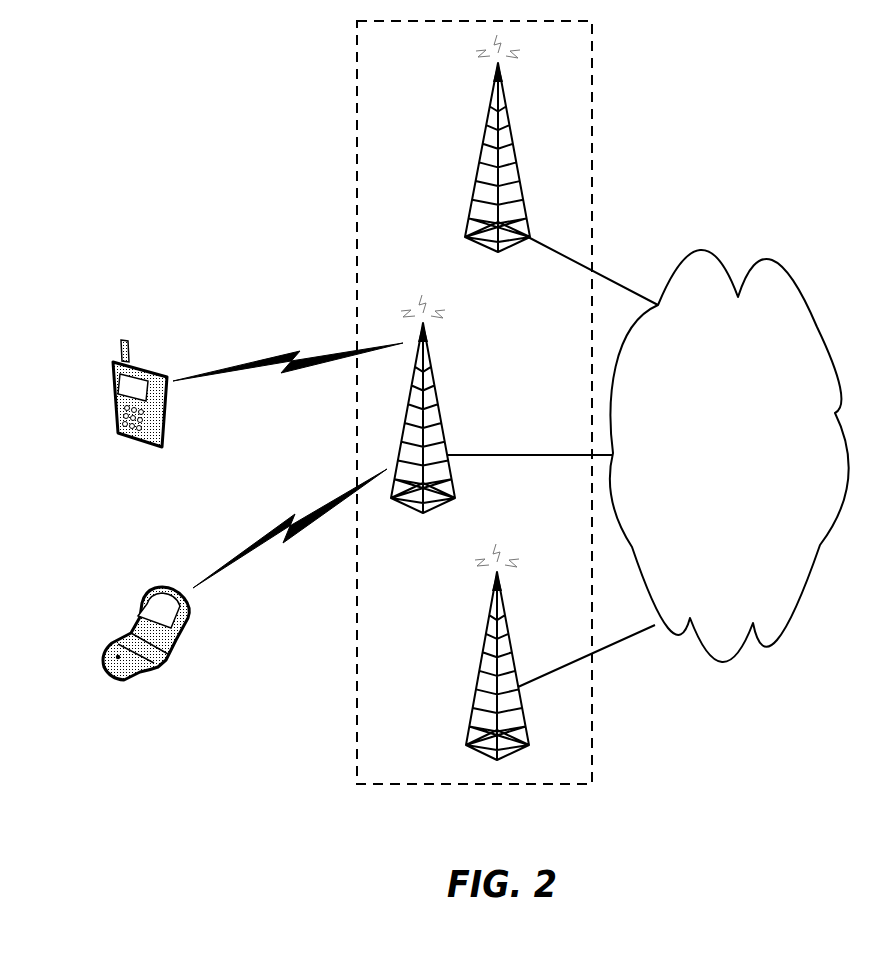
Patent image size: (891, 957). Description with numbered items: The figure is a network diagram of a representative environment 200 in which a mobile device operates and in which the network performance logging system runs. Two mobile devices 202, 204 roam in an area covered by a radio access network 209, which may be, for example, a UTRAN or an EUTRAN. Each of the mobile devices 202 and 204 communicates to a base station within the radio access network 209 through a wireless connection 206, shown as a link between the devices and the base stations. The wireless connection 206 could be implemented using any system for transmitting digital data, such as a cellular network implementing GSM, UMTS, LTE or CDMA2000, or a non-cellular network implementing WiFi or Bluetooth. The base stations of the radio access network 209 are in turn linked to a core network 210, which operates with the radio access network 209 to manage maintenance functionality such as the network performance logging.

The representative environment 200 is at (212, 752).
The mobile device 202 is at (145, 600).
The mobile device 204 is at (113, 362).
The wireless connection 206 is at (293, 388).
The radio access network 209 is at (593, 175).
The core network 210 is at (772, 260).